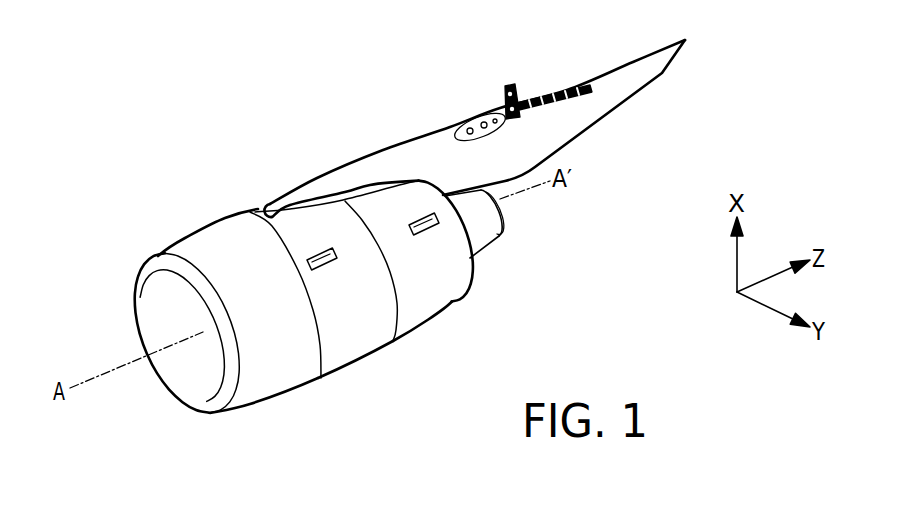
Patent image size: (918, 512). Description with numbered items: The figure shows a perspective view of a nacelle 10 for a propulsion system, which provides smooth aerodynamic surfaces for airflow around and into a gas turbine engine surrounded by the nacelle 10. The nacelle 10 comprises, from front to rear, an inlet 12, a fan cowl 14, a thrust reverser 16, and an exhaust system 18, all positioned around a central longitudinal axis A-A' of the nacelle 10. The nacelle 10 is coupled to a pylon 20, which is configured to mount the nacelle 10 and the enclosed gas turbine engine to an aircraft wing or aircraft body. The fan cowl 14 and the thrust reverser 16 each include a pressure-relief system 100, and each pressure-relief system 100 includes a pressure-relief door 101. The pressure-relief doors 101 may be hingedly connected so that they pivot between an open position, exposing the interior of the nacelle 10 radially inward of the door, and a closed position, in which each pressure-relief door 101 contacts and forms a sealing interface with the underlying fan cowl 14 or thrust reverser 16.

The nacelle 10 is at (140, 178).
The inlet 12 is at (272, 380).
The fan cowl 14 is at (362, 337).
The thrust reverser 16 is at (450, 278).
The exhaust system 18 is at (480, 233).
The pylon 20 is at (560, 125).
The pressure-relief system 100 is at (320, 279).
The pressure-relief door 101 is at (323, 262).